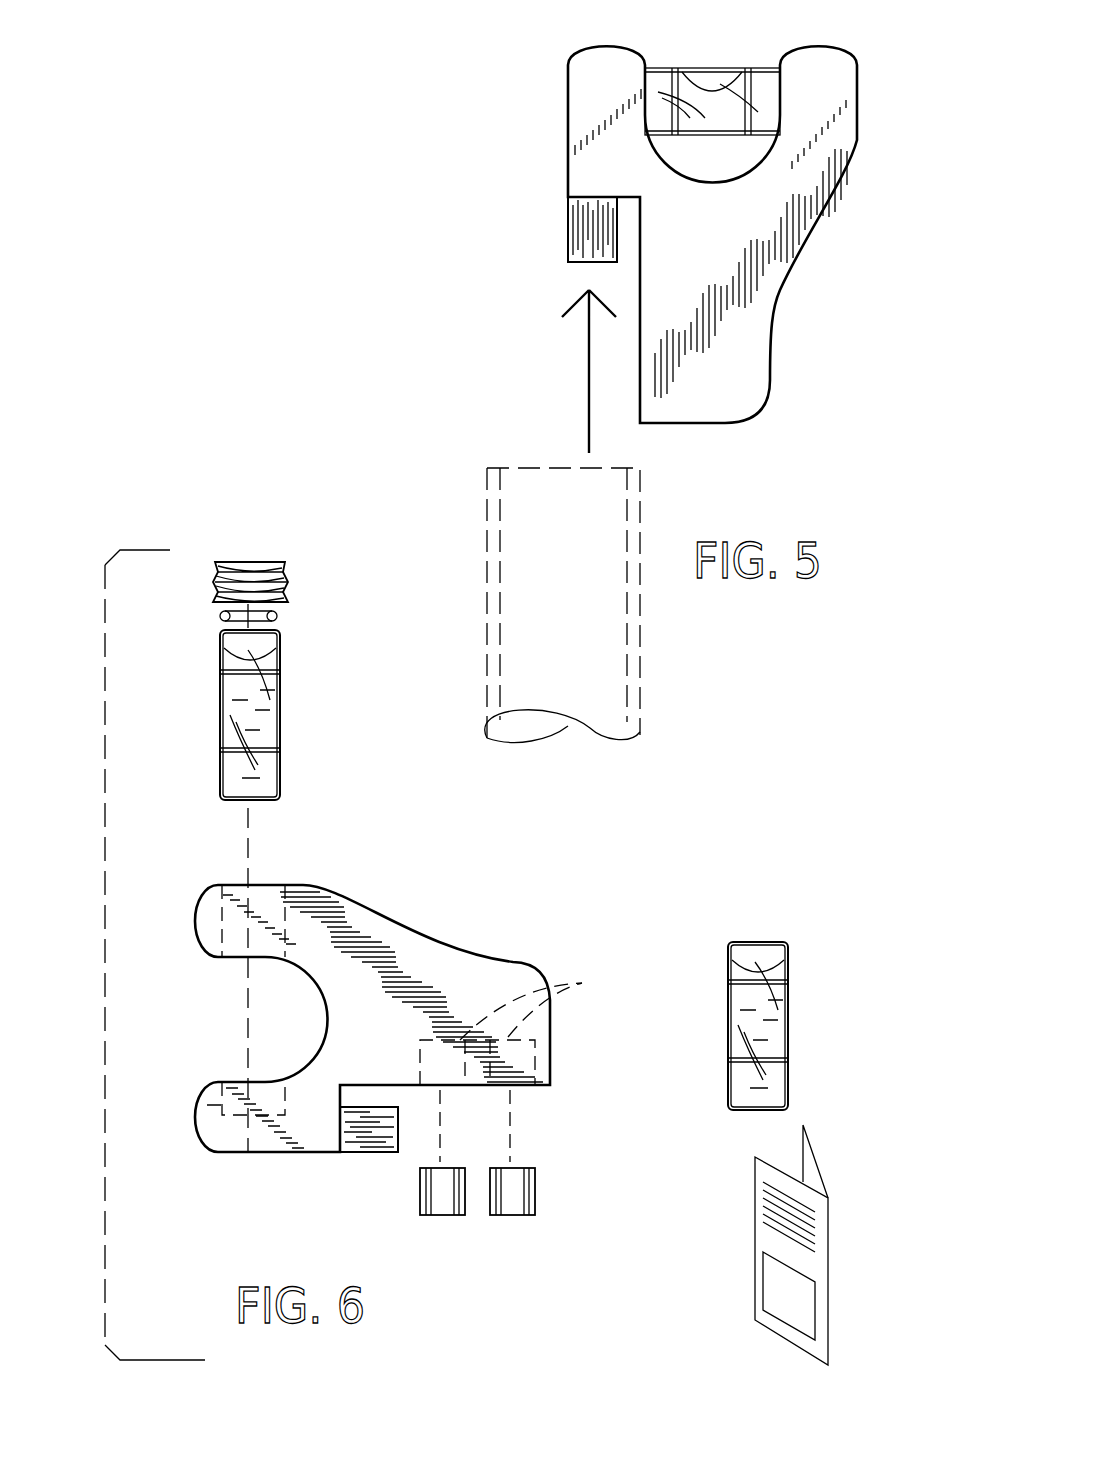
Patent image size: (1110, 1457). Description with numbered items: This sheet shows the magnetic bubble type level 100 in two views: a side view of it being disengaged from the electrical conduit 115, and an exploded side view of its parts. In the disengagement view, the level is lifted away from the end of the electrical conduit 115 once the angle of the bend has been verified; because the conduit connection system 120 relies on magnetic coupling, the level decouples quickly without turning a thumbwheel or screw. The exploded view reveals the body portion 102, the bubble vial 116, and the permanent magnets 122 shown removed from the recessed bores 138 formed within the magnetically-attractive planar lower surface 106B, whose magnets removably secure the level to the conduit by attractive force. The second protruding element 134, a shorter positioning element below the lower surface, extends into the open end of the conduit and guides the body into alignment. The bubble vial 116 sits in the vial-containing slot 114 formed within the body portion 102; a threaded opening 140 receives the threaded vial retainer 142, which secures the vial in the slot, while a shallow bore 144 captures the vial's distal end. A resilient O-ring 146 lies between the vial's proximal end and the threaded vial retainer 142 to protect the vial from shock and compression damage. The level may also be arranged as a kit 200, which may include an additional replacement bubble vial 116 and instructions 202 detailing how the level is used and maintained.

In FIG. 5, the magnetic bubble type level 100 is at (640, 251).
In FIG. 6, the magnetic bubble type level 100 is at (105, 779).
In FIG. 6, the body portion 102 is at (455, 922).
In FIG. 6, the magnetically-attractive planar lower surface 106B is at (537, 1085).
In FIG. 6, the vial-containing slot 114 is at (222, 1096).
In FIG. 5, the electrical conduit 115 is at (640, 672).
In FIG. 5, the bubble vial 116 is at (720, 68).
In FIG. 6, the bubble vial 116 is at (282, 702).
In FIG. 5, the conduit connection system 120 is at (516, 275).
In FIG. 6, the permanent magnet 122 is at (442, 1215).
In FIG. 6, the second protruding element 134 is at (373, 1153).
In FIG. 6, the recessed bores 138 is at (545, 1003).
In FIG. 6, the threaded opening 140 is at (238, 885).
In FIG. 6, the threaded vial retainer 142 is at (286, 575).
In FIG. 6, the shallow bore 144 is at (208, 1104).
In FIG. 6, the resilient O-ring 146 is at (283, 613).
In FIG. 6, the kit 200 is at (860, 846).
In FIG. 6, the instructions 202 is at (755, 1267).